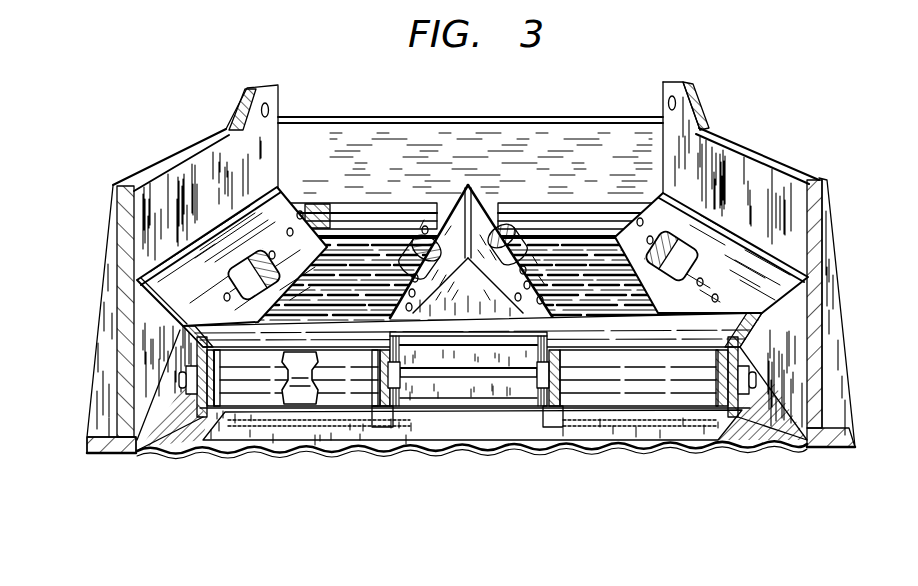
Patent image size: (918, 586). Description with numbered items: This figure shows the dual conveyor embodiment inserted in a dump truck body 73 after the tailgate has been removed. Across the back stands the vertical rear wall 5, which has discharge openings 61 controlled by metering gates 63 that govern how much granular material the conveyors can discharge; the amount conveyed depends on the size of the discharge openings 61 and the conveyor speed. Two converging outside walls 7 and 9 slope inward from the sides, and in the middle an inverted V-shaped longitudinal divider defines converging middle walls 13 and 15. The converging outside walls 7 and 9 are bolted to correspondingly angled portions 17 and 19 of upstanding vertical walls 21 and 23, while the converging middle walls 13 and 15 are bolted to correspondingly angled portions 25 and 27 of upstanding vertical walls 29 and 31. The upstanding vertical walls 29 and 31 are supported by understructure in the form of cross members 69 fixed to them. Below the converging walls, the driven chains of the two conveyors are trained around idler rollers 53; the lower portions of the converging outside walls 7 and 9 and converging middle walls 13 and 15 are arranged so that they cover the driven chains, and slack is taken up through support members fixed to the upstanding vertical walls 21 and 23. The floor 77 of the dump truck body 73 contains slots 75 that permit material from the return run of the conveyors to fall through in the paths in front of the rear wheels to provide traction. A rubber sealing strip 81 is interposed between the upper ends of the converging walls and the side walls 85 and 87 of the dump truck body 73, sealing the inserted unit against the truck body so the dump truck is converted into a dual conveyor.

The vertical rear wall 5 is at (311, 159).
The converging outside wall 7 is at (665, 223).
The converging outside wall 9 is at (293, 230).
The converging middle wall 13 is at (507, 274).
The converging middle wall 15 is at (462, 227).
The angled portion 17 is at (697, 256).
The angled portion 19 is at (233, 272).
The upstanding vertical wall 21 is at (740, 354).
The upstanding vertical wall 23 is at (195, 357).
The angled portion 25 is at (487, 217).
The angled portion 27 is at (428, 205).
The upstanding vertical wall 29 is at (537, 360).
The upstanding vertical wall 31 is at (410, 357).
The idler roller 53 is at (298, 408).
The discharge opening 61 is at (383, 210).
The metering gate 63 is at (340, 220).
The cross member 69 is at (470, 340).
The dump truck body 73 is at (772, 158).
The slot 75 is at (633, 430).
The floor 77 is at (530, 434).
The rubber sealing strip 81 is at (183, 255).
The side wall 85 is at (702, 168).
The side wall 87 is at (272, 161).